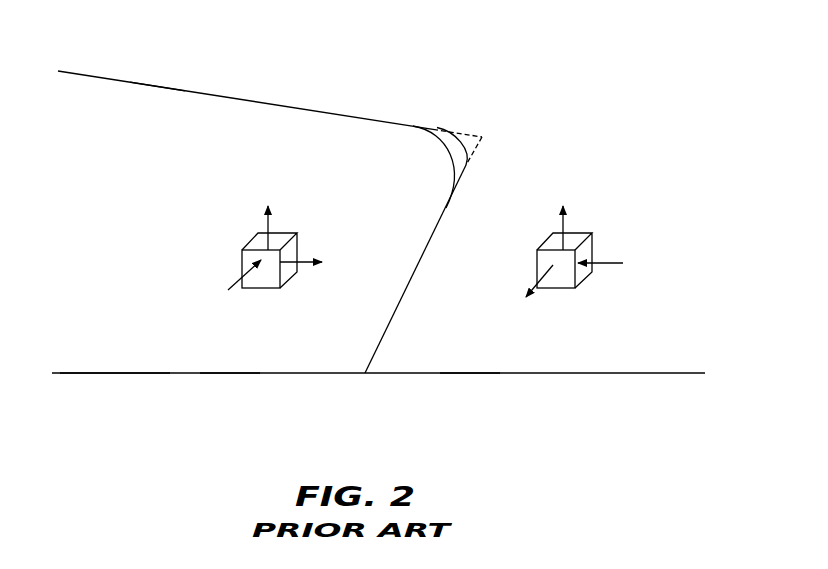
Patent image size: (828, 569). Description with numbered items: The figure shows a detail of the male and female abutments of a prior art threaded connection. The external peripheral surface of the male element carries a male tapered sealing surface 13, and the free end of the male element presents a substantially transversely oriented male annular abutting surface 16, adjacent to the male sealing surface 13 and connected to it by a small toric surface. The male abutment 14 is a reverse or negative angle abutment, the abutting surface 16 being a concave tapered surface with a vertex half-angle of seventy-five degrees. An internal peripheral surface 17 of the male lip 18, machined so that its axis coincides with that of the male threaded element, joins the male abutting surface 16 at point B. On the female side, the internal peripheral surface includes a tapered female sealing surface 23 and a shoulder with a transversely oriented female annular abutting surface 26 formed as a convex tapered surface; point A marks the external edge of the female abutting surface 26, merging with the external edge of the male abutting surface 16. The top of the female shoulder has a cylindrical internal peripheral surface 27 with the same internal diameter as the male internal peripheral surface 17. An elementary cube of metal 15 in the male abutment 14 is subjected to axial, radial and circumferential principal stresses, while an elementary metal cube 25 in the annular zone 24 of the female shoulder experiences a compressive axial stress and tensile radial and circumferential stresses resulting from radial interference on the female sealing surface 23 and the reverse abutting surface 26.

The male tapered sealing surface 13 is at (297, 105).
The female sealing surface 23 is at (158, 88).
The female annular abutting surface 26 is at (427, 234).
The male annular abutting surface 16 is at (388, 318).
The male abutment 14 is at (280, 320).
The male lip 18 is at (116, 320).
The internal peripheral surface 17 is at (237, 373).
The cylindrical internal peripheral surface 27 is at (473, 373).
The elementary cube of metal 15 is at (242, 256).
The annular zone 24 is at (505, 298).
The elementary metal cube 25 is at (578, 268).